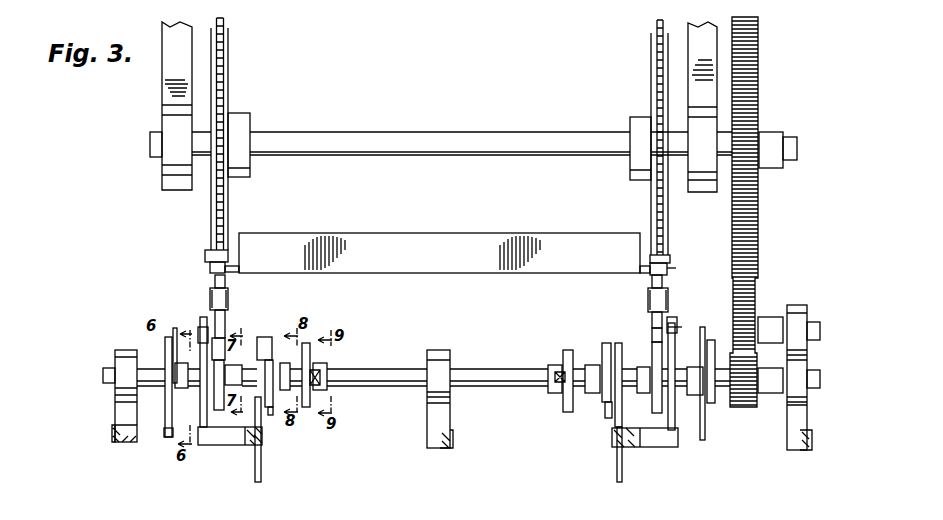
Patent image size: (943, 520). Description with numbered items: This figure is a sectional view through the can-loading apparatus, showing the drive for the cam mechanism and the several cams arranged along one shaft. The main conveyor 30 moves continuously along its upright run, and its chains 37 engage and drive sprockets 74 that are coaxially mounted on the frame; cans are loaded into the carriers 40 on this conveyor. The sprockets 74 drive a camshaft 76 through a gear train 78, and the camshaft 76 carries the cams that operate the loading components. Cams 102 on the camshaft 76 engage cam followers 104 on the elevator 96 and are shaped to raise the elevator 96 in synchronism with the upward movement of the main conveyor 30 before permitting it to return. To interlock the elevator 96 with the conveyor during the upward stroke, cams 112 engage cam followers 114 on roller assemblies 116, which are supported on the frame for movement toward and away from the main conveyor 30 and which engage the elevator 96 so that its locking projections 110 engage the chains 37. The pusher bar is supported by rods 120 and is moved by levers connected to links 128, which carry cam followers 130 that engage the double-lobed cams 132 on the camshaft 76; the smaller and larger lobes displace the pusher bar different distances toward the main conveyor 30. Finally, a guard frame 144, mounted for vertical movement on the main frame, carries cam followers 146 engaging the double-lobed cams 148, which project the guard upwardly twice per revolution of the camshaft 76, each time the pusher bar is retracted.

The main conveyor 30 is at (678, 271).
The chains 37 is at (207, 262).
The carriers 40 is at (441, 233).
The sprockets 74 is at (229, 30).
The camshaft 76 is at (386, 387).
The gear train 78 is at (762, 271).
The elevator 96 is at (670, 306).
The cams 102 is at (168, 438).
The cam followers 104 is at (170, 386).
The locking projections 110 is at (226, 282).
The cams 112 is at (219, 413).
The cam followers 114 is at (236, 345).
The roller assemblies 116 is at (232, 300).
The rods 120 is at (273, 337).
The links 128 is at (262, 476).
The cam followers 130 is at (603, 344).
The cams 132 is at (272, 412).
The guard frame 144 is at (550, 386).
The cam followers 146 is at (330, 366).
The cams 148 is at (310, 347).